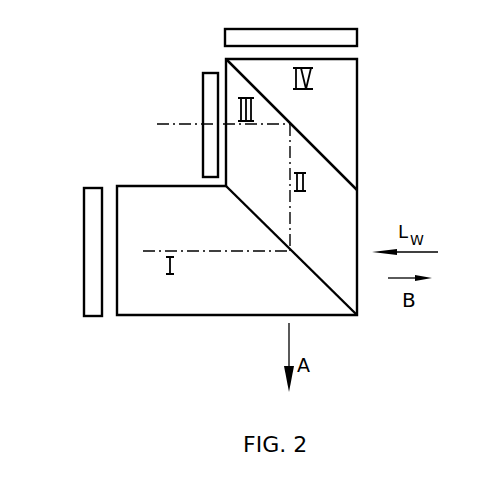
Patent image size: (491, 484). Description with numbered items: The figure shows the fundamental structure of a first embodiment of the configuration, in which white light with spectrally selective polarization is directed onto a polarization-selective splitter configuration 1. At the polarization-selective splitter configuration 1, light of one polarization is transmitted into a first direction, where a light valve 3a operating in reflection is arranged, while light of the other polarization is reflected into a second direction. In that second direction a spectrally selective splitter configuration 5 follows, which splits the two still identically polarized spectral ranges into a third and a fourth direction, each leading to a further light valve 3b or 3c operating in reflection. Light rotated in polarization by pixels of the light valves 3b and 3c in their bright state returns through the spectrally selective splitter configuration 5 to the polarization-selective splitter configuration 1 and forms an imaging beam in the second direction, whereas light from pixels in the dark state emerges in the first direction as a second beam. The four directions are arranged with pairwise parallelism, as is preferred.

The polarization-selective splitter configuration 1 is at (265, 222).
The light valve 3a is at (95, 292).
The light valve 3b is at (211, 85).
The light valve 3c is at (346, 37).
The spectrally selective splitter configuration 5 is at (285, 113).